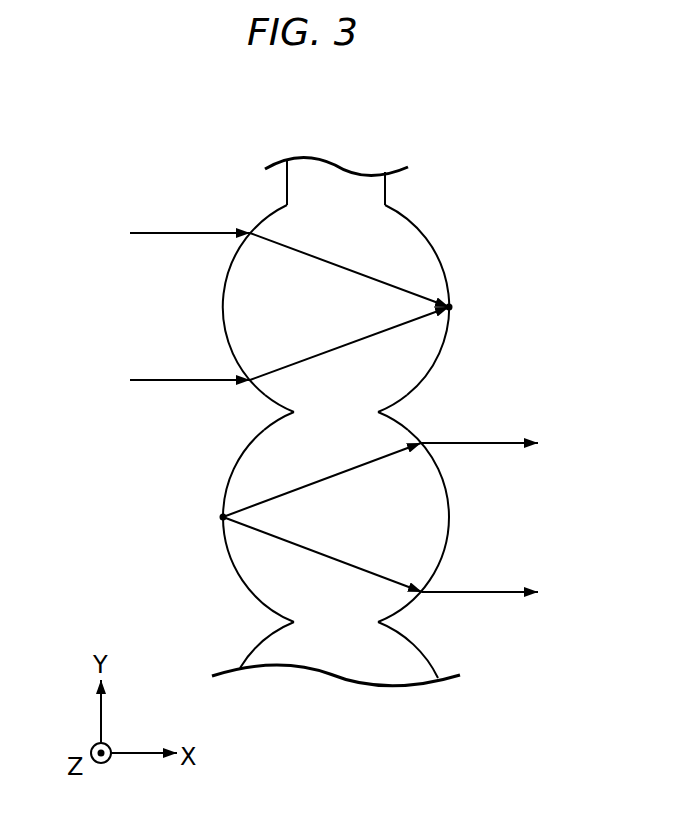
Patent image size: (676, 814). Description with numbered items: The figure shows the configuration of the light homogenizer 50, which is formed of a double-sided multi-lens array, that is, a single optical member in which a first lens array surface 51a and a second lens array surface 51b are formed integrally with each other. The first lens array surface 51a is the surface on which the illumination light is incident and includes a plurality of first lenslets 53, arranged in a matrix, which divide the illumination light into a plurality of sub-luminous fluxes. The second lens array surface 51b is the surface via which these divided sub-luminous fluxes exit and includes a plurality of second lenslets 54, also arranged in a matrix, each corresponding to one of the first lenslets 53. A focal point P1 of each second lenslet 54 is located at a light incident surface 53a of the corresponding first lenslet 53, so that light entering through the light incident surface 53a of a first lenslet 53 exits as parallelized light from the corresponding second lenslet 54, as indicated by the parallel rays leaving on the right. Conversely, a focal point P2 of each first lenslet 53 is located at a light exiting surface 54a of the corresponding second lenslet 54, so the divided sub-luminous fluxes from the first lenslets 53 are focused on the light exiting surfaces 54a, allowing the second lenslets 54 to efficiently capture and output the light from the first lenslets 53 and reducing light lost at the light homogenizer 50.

The light homogenizer 50 is at (328, 383).
The first lens array surface 51a is at (263, 425).
The second lens array surface 51b is at (407, 422).
The first lenslet 53 is at (250, 575).
The light incident surface 53a is at (222, 302).
The second lenslet 54 is at (430, 527).
The light exiting surface 54a is at (435, 243).
The focal point of second lenslet P1 is at (223, 517).
The focal point of first lenslet P2 is at (452, 307).